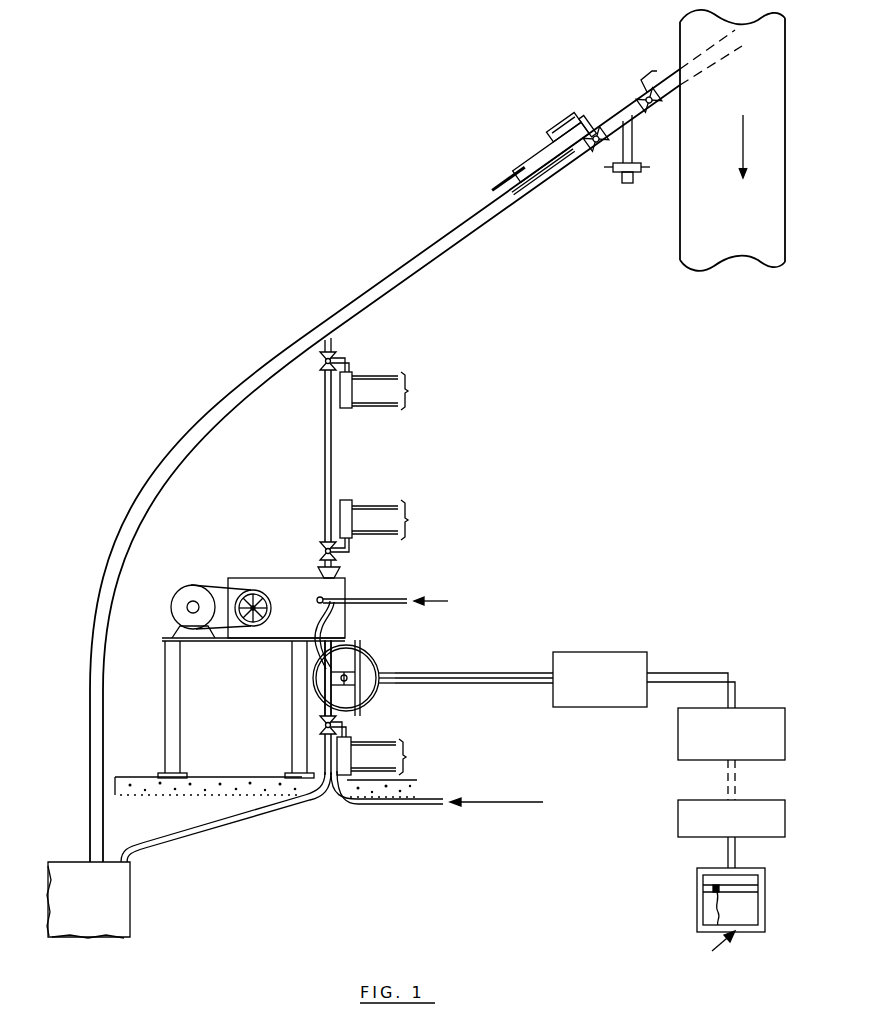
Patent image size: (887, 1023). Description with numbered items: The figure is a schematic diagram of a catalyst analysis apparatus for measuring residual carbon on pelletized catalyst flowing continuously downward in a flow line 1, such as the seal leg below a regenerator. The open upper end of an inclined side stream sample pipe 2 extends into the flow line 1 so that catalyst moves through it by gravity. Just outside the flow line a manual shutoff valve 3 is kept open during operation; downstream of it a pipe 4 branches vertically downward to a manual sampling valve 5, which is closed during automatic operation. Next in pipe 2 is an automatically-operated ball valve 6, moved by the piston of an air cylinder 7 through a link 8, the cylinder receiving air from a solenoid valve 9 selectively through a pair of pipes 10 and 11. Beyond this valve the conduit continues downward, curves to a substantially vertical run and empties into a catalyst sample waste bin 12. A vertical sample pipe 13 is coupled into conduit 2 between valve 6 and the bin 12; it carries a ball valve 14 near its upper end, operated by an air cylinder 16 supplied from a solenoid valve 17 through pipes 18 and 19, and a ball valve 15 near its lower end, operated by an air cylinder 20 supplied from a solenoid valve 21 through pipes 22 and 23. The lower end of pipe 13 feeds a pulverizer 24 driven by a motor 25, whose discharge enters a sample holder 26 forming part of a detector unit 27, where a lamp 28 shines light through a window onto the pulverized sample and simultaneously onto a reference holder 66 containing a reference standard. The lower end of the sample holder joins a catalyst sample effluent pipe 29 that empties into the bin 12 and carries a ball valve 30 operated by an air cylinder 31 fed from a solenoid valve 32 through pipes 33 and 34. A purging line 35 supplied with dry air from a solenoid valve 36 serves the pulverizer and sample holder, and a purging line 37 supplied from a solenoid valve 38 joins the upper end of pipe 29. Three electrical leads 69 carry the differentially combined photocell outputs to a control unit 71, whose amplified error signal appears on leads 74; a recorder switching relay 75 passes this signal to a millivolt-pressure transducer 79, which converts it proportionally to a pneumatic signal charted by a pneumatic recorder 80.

The flow line 1 is at (680, 216).
The side stream sample pipe 2 is at (294, 350).
The manual shutoff valve 3 is at (640, 95).
The pipe 4 is at (633, 152).
The manual sampling valve 5 is at (618, 173).
The ball valve 6 is at (596, 130).
The air cylinder 7 is at (550, 131).
The link 8 is at (580, 116).
The solenoid valve 9 is at (490, 180).
The pipe 10 is at (518, 147).
The pipe 11 is at (530, 170).
The catalyst sample waste bin 12 is at (130, 900).
The sample pipe 13 is at (325, 437).
The ball valve 14 is at (320, 364).
The ball valve 15 is at (320, 553).
The air cylinder 16 is at (345, 409).
The solenoid valve 17 is at (550, 400).
The pipe 18 is at (362, 376).
The pipe 19 is at (377, 407).
The air cylinder 20 is at (344, 500).
The solenoid valve 21 is at (550, 530).
The pipe 22 is at (372, 506).
The pipe 23 is at (370, 535).
The pulverizer 24 is at (254, 578).
The motor 25 is at (182, 591).
The sample holder 26 is at (326, 677).
The detector unit 27 is at (312, 668).
The lamp 28 is at (347, 673).
The catalyst sample effluent pipe 29 is at (218, 822).
The ball valve 30 is at (320, 727).
The air cylinder 31 is at (348, 738).
The solenoid valve 32 is at (549, 767).
The pipe 33 is at (378, 742).
The pipe 34 is at (362, 770).
The purging line 35 is at (358, 600).
The solenoid valve 36 is at (592, 610).
The purging line 37 is at (405, 805).
The solenoid valve 38 is at (535, 824).
The reference holder 66 is at (378, 668).
The electrical leads 69 is at (460, 673).
The control unit 71 is at (603, 652).
The leads 74 is at (688, 682).
The recorder switching relay 75 is at (678, 724).
The millivolt-pressure transducer 79 is at (678, 804).
The pneumatic recorder 80 is at (697, 883).